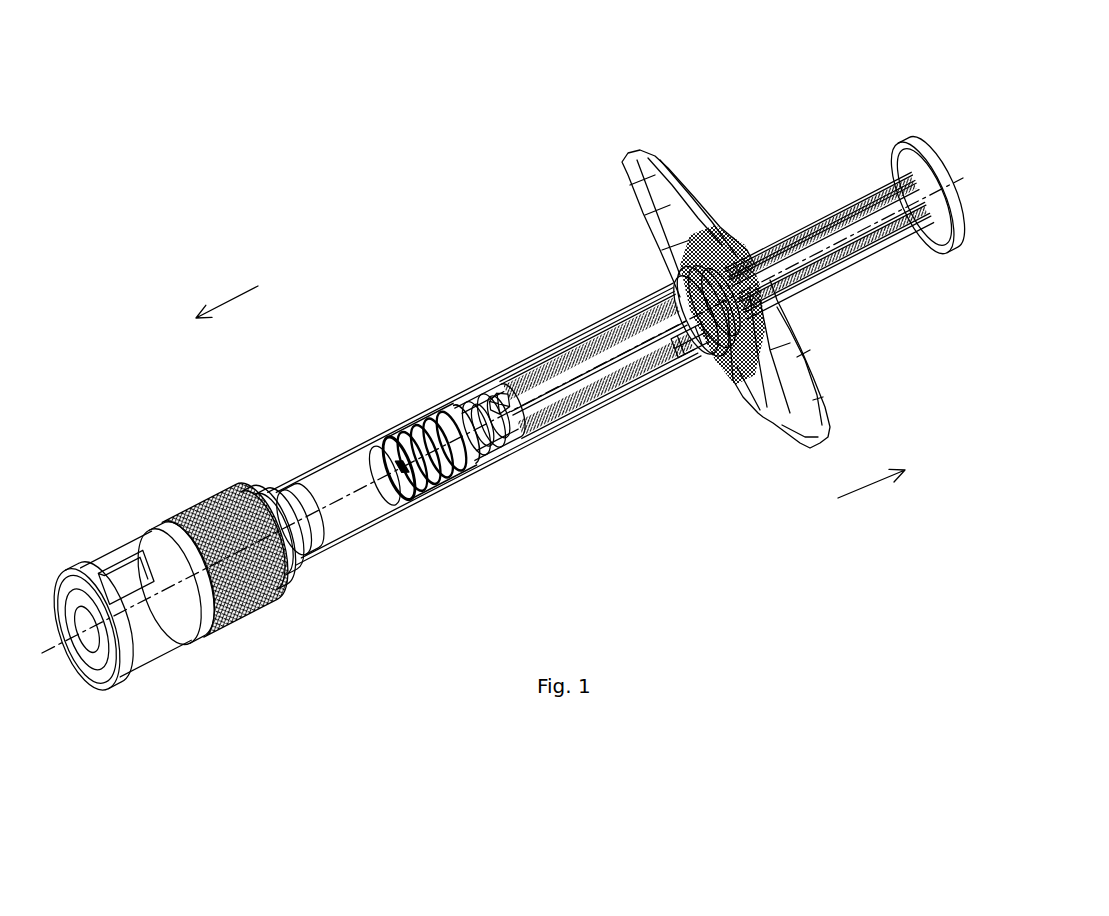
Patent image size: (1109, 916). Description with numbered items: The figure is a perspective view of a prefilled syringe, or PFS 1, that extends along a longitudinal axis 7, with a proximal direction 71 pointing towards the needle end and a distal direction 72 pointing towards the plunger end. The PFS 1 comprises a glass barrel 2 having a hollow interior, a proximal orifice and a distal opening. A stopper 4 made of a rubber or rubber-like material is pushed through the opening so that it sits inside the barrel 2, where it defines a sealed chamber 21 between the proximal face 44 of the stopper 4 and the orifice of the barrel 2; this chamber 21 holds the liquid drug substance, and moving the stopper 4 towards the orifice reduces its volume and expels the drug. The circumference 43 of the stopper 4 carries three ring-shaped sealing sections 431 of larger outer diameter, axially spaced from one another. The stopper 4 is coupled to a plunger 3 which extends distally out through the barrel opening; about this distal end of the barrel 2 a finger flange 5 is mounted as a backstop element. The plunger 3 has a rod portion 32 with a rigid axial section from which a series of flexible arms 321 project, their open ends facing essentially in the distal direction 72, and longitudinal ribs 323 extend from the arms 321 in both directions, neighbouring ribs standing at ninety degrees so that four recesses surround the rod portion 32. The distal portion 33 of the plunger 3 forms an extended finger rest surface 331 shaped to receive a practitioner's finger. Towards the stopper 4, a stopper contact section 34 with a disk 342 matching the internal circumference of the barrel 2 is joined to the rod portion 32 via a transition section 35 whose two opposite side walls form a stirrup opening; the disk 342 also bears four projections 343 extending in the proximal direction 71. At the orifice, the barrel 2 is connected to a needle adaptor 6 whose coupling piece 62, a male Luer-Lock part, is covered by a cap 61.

The prefilled syringe 1 is at (523, 206).
The glass barrel 2 is at (330, 448).
The sealed chamber 21 is at (338, 518).
The plunger 3 is at (823, 188).
The rod portion 32 is at (783, 243).
The flexible arms 321 is at (690, 352).
The longitudinal ribs 323 is at (884, 228).
The distal portion 33 is at (898, 142).
The finger rest surface 331 is at (915, 175).
The stopper contact section 34 is at (462, 405).
The disk 342 is at (483, 427).
The projections 343 is at (480, 445).
The transition section 35 is at (482, 395).
The stopper 4 is at (413, 428).
The circumference 43 is at (406, 442).
The sealing sections 431 is at (447, 470).
The proximal face 44 is at (407, 475).
The finger flange 5 is at (626, 149).
The needle adaptor 6 is at (153, 501).
The cap 61 is at (120, 547).
The coupling piece 62 is at (200, 508).
The longitudinal axis 7 is at (57, 648).
The proximal direction 71 is at (226, 297).
The distal direction 72 is at (858, 490).